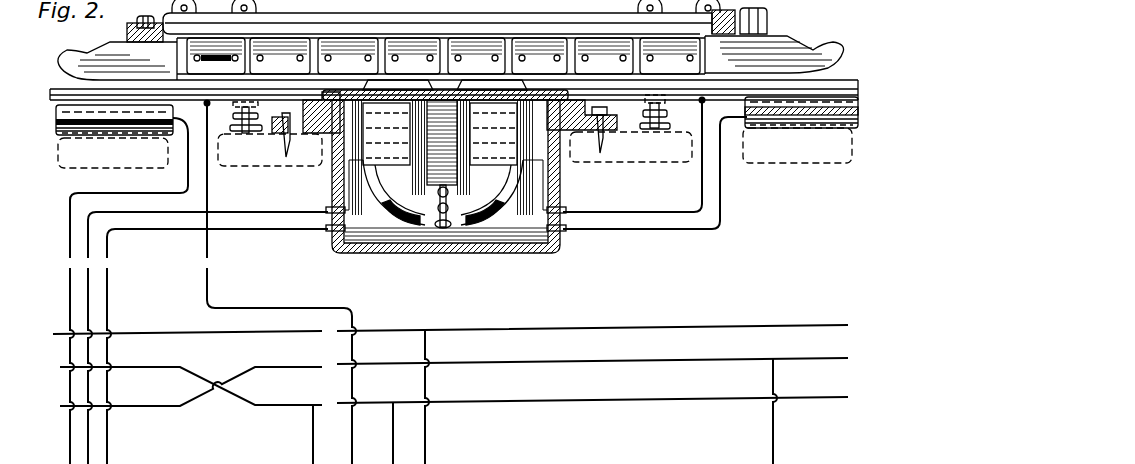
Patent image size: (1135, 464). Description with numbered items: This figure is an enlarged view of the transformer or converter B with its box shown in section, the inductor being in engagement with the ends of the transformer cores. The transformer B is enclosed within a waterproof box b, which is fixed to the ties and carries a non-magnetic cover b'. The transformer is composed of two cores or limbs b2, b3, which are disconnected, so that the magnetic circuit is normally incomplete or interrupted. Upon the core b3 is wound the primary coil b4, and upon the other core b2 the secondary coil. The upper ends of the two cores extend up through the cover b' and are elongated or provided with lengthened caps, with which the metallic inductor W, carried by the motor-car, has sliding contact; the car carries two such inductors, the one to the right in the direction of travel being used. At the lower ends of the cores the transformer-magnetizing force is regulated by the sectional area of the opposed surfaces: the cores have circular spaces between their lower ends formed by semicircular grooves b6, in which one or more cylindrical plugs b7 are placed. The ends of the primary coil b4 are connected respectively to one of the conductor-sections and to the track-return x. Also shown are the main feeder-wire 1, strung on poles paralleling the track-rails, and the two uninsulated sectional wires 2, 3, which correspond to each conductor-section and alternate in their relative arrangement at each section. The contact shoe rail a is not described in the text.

The metallic inductor W is at (446, 33).
The contact shoe rail a is at (454, 68).
The non-magnetic cover b' is at (445, 75).
The transformer or converter B is at (446, 176).
The core or limb b2 is at (410, 153).
The core or limb b3 is at (474, 188).
The waterproof box b is at (402, 222).
The primary coil b4 is at (460, 183).
The semicircular grooves b6 is at (446, 223).
The cylindrical plugs b7 is at (420, 216).
The track-return x is at (160, 136).
The main feeder-wire 1 is at (652, 319).
The uninsulated sectional wire 2 is at (661, 357).
The uninsulated sectional wire 3 is at (660, 392).